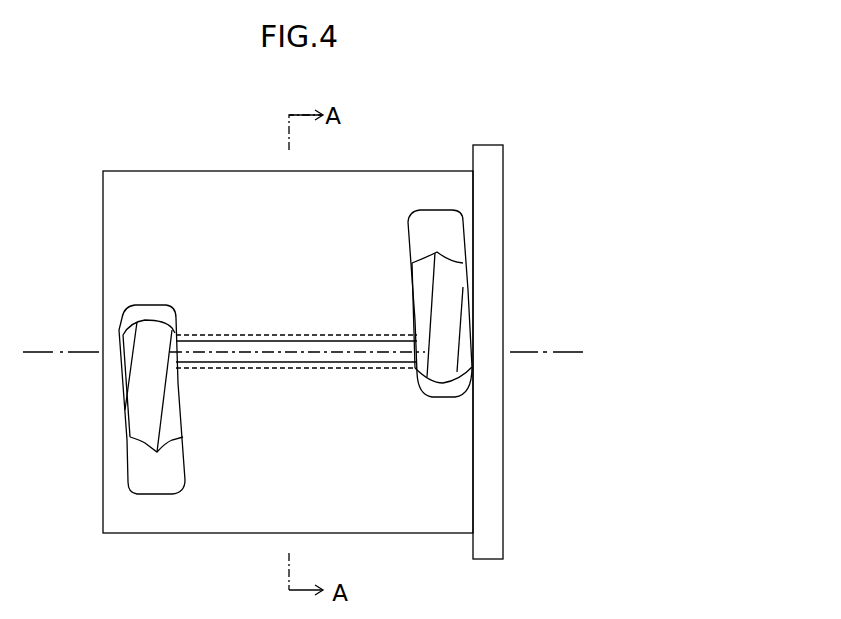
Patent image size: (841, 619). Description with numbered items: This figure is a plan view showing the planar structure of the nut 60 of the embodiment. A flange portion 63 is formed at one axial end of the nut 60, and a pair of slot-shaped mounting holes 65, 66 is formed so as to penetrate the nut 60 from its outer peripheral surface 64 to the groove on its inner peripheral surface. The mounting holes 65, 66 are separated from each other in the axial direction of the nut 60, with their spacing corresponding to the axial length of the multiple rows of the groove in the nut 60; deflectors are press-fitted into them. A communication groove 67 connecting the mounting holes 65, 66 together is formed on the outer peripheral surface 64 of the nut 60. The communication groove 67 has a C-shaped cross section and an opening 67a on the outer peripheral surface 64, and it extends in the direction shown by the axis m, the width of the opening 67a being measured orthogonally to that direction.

The nut 60 is at (88, 172).
The flange portion 63 is at (487, 145).
The outer peripheral surface 64 is at (235, 192).
The mounting hole 65 is at (152, 315).
The mounting hole 66 is at (432, 230).
The communication groove 67 is at (305, 352).
The opening 67a is at (253, 347).
The axis m is at (323, 353).